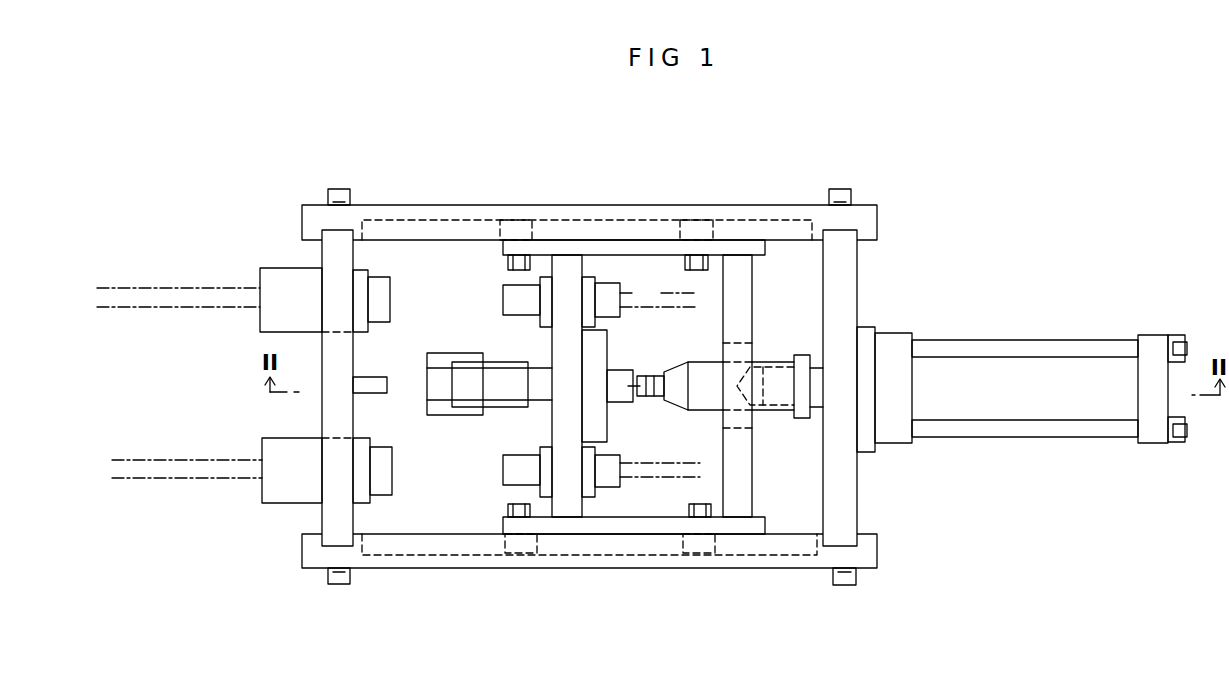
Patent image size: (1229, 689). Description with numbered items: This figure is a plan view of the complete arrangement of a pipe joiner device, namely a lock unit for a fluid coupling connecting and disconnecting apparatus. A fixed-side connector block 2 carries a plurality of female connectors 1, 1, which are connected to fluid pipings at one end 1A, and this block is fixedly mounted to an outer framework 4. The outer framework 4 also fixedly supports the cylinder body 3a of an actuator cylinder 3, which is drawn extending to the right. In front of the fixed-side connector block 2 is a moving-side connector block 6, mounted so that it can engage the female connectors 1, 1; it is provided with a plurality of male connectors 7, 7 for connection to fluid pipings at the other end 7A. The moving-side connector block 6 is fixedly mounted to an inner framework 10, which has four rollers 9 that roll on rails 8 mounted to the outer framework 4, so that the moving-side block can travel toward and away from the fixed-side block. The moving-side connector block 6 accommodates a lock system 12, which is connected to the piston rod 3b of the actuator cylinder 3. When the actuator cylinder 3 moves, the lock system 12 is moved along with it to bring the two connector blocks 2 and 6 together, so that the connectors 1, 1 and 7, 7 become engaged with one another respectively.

The female connector 1 is at (275, 288).
The one end of fluid pipings 1A is at (114, 289).
The fixed-side connector block 2 is at (321, 340).
The actuator cylinder 3 is at (1022, 340).
The cylinder body 3a is at (947, 368).
The piston rod 3b is at (648, 372).
The outer framework 4 is at (565, 203).
The moving-side connector block 6 is at (570, 508).
The male connector 7 is at (513, 296).
The other end of fluid pipings 7A is at (695, 310).
The rail 8 is at (462, 220).
The roller 9 is at (530, 222).
The inner framework 10 is at (647, 258).
The lock system 12 is at (430, 346).